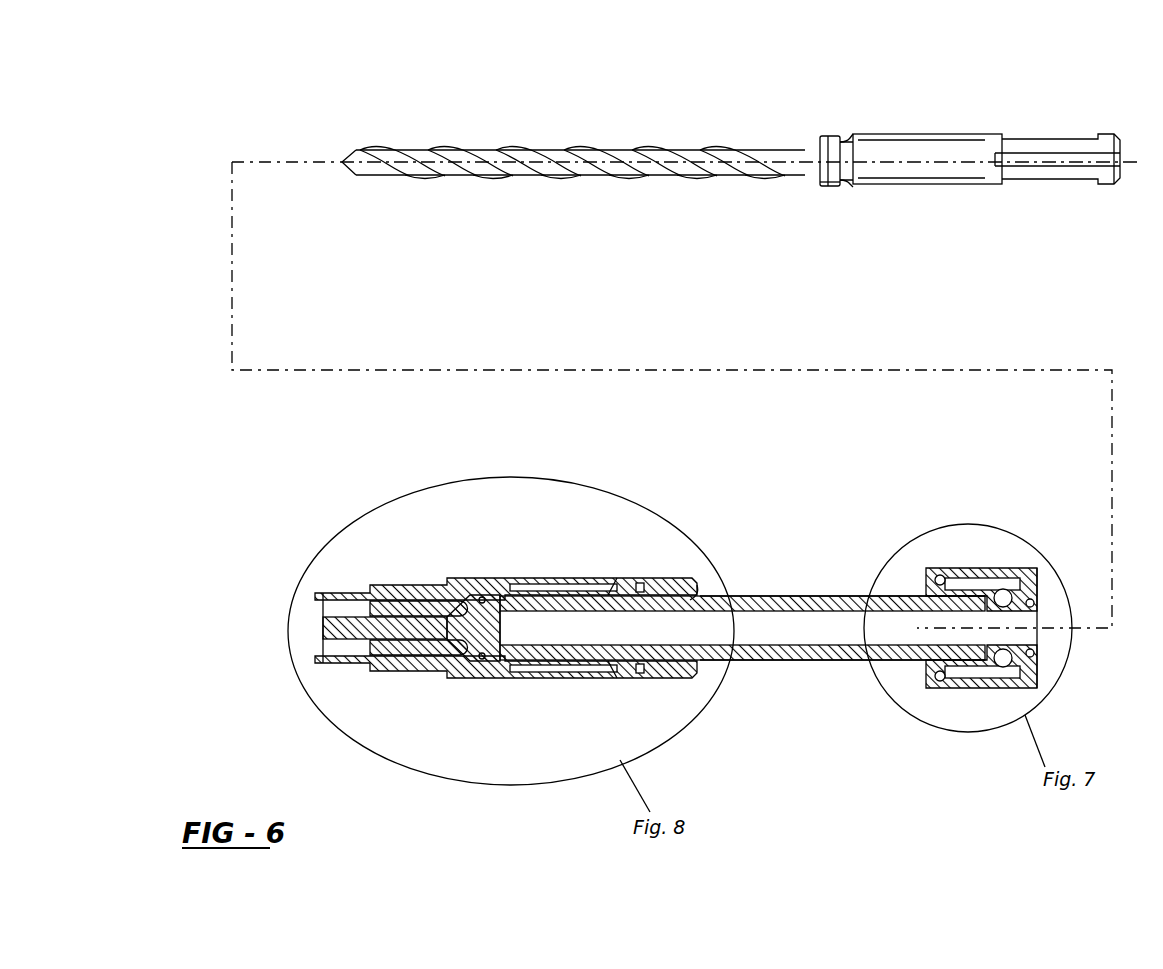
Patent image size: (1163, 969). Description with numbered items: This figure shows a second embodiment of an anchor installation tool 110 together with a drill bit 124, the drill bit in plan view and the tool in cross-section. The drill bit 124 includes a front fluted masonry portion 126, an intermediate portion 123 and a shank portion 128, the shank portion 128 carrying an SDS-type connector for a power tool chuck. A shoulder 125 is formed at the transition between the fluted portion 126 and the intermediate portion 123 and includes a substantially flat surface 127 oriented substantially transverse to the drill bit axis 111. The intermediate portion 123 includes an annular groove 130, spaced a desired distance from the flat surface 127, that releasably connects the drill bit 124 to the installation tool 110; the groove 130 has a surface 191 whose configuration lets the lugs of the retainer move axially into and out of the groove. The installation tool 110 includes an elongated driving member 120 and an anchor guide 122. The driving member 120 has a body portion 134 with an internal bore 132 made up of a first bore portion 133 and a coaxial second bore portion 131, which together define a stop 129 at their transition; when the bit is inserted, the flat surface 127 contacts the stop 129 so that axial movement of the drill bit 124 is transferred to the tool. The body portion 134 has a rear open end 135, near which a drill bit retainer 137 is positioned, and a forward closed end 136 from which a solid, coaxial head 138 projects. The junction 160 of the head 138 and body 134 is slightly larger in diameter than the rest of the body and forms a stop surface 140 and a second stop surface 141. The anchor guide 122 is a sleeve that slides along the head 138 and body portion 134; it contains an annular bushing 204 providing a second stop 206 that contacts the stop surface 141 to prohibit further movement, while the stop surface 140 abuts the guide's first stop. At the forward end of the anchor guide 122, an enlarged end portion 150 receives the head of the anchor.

The installation tool 110 is at (742, 571).
The drill bit axis 111 is at (302, 158).
The elongated driving member 120 is at (801, 594).
The anchor guide 122 is at (538, 577).
The intermediate portion 123 is at (884, 190).
The drill bit 124 is at (796, 98).
The shoulder 125 is at (824, 190).
The front fluted masonry portion 126 is at (627, 188).
The flat surface 127 is at (816, 133).
The shank portion 128 is at (1002, 128).
The stop 129 is at (993, 605).
The annular groove 130 is at (849, 135).
The second bore portion 131 is at (1033, 590).
The internal bore 132 is at (851, 620).
The first bore portion 133 is at (695, 625).
The body portion 134 is at (742, 597).
The rear open end 135 is at (1040, 614).
The forward closed end 136 is at (504, 620).
The drill bit retainer 137 is at (961, 697).
The head 138 is at (395, 623).
The stop surface 140 is at (473, 665).
The second stop surface 141 is at (497, 672).
The end portion 150 is at (318, 645).
The junction 160 is at (478, 610).
The surface 191 is at (845, 184).
The annular bushing 204 is at (680, 678).
The second stop 206 is at (606, 664).